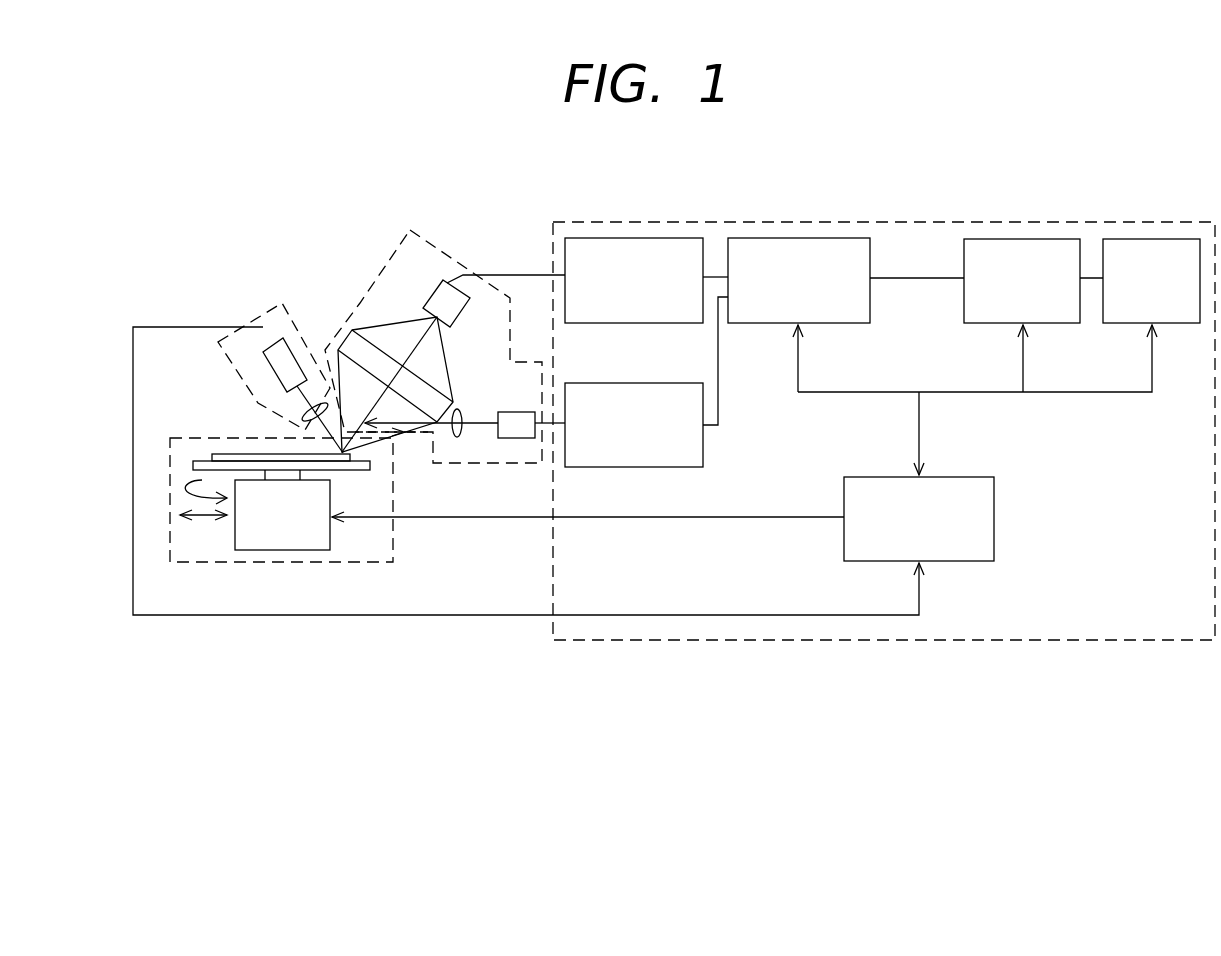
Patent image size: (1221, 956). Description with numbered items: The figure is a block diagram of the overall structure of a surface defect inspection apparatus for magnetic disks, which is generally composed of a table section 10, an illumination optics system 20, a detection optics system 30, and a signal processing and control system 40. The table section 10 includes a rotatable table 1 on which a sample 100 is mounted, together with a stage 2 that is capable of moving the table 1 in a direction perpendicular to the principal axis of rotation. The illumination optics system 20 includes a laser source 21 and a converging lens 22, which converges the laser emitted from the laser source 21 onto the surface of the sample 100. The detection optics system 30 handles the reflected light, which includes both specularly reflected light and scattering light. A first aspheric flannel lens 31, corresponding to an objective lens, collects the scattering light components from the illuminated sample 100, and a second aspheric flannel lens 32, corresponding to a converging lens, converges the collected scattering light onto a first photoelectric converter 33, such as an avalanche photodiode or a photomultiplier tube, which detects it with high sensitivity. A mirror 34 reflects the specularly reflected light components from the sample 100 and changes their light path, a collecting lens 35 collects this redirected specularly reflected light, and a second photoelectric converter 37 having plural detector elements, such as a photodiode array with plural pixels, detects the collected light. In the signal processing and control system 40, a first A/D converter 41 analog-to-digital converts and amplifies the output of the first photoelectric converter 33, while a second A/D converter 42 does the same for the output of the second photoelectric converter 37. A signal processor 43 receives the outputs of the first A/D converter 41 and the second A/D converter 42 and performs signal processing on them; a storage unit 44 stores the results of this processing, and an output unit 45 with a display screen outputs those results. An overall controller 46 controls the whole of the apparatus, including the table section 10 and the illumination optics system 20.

The rotatable table 1 is at (196, 461).
The stage 2 is at (235, 536).
The table section 10 is at (170, 482).
The sample 100 is at (232, 455).
The illumination optics system 20 is at (263, 313).
The laser source 21 is at (282, 339).
The converging lens 22 is at (320, 400).
The detection optics system 30 is at (458, 262).
The first aspheric flannel lens 31 is at (352, 357).
The second aspheric flannel lens 32 is at (386, 366).
The first photoelectric converter 33 is at (443, 279).
The mirror 34 is at (370, 424).
The collecting lens 35 is at (458, 438).
The second photoelectric converter 37 is at (516, 439).
The signal processing and control system 40 is at (922, 221).
The first A/D converter 41 is at (638, 238).
The second A/D converter 42 is at (704, 452).
The signal processor 43 is at (803, 238).
The storage unit 44 is at (1024, 239).
The output unit 45 is at (1152, 239).
The overall controller 46 is at (994, 518).